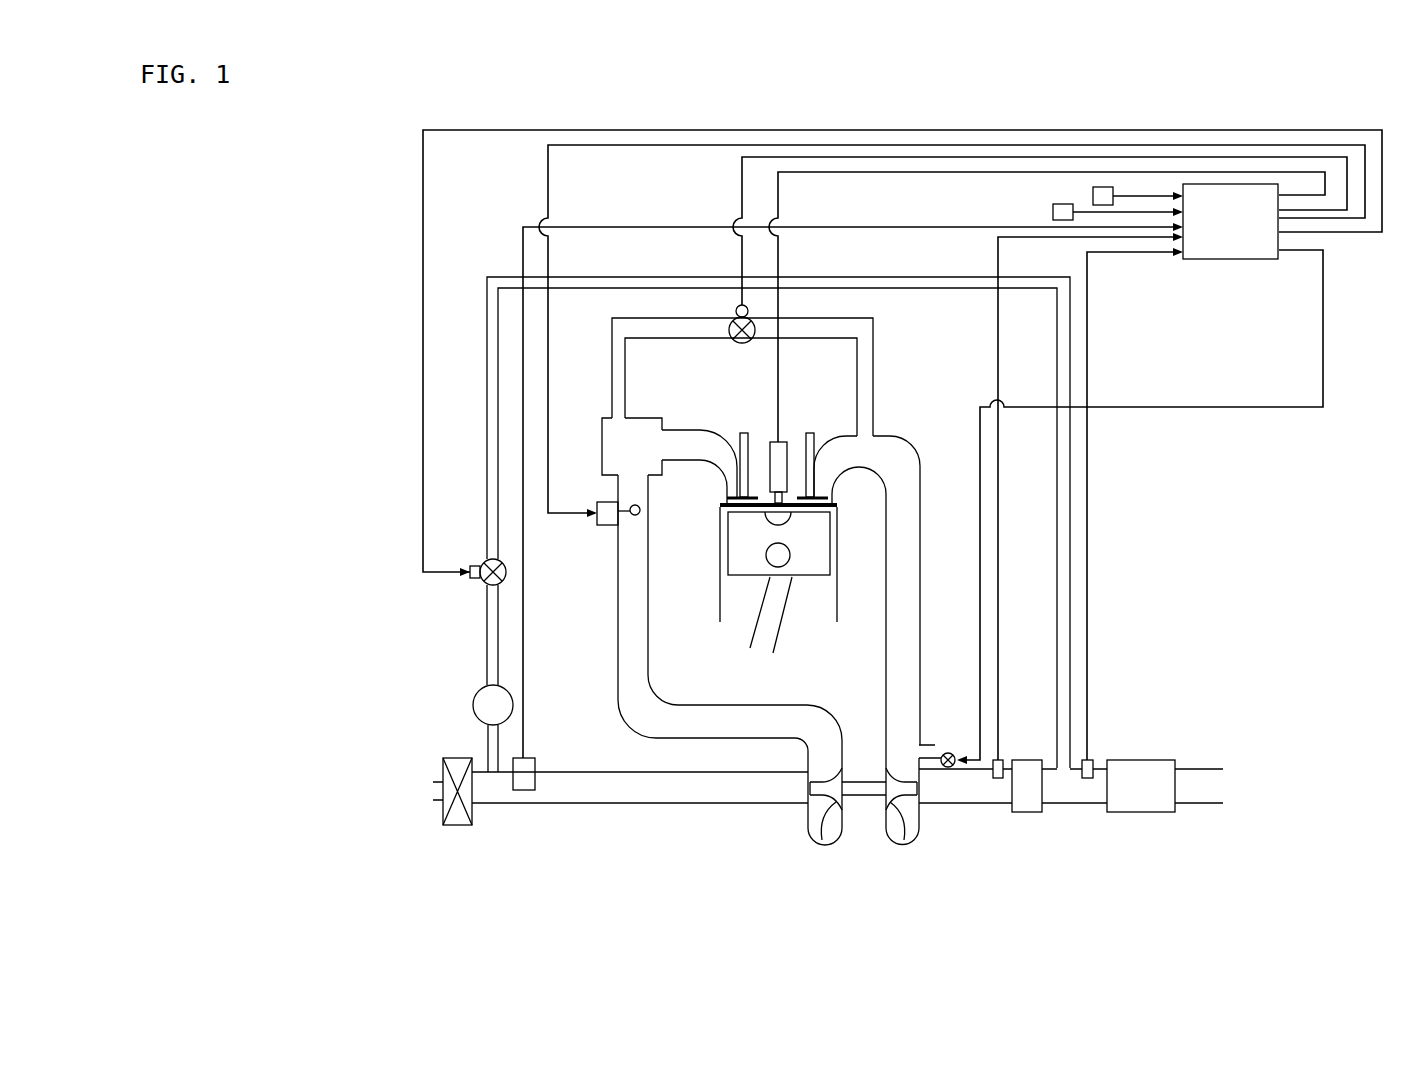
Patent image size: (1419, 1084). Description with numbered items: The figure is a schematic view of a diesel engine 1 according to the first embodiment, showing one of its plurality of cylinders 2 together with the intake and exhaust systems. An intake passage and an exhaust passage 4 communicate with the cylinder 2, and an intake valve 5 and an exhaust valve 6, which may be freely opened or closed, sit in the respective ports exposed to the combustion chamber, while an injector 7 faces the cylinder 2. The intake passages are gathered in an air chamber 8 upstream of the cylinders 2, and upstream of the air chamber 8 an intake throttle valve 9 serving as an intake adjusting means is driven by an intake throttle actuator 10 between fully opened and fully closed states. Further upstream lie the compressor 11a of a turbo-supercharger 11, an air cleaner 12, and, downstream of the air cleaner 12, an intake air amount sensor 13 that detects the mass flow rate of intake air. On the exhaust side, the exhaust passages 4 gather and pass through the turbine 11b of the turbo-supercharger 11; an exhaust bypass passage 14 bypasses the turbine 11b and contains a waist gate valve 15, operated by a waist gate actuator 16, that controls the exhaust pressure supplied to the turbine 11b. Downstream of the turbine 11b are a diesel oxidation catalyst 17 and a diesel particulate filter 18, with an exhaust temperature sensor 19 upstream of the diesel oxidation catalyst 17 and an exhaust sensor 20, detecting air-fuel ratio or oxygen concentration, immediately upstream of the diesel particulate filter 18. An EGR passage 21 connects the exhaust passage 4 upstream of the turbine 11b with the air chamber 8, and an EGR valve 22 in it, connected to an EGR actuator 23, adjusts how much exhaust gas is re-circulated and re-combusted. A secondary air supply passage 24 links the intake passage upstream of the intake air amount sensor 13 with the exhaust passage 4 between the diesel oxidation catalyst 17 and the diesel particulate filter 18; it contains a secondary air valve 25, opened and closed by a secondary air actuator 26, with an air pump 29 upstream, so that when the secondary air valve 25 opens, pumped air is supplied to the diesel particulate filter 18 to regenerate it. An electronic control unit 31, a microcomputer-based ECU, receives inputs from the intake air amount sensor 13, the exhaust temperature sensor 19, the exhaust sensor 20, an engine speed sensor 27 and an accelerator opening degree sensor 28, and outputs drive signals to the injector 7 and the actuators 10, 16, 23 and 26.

The diesel engine 1 is at (759, 543).
The cylinder 2 is at (720, 523).
The exhaust passage 4 is at (886, 655).
The intake valve 5 is at (740, 440).
The exhaust valve 6 is at (813, 440).
The injector 7 is at (787, 442).
The air chamber 8 is at (640, 456).
The intake throttle valve 9 is at (637, 515).
The intake throttle actuator 10 is at (598, 502).
The turbo-supercharger 11 is at (867, 848).
The compressor 11a is at (825, 846).
The turbine 11b is at (903, 829).
The air cleaner 12 is at (452, 828).
The intake air amount sensor 13 is at (535, 762).
The exhaust bypass passage 14 is at (932, 745).
The waist gate valve 15 is at (950, 767).
The waist gate actuator 16 is at (946, 752).
The diesel oxidation catalyst 17 is at (1028, 812).
The diesel particulate filter 18 is at (1138, 812).
The exhaust temperature sensor 19 is at (1003, 760).
The exhaust sensor 20 is at (1094, 760).
The EGR passage 21 is at (876, 388).
The EGR valve 22 is at (742, 345).
The EGR actuator 23 is at (735, 314).
The secondary air supply passage 24 is at (925, 291).
The secondary air valve 25 is at (485, 560).
The secondary air actuator 26 is at (470, 580).
The engine speed sensor 27 is at (1090, 195).
The accelerator opening degree sensor 28 is at (1050, 212).
The air pump 29 is at (472, 705).
The electronic control unit 31 is at (1230, 262).